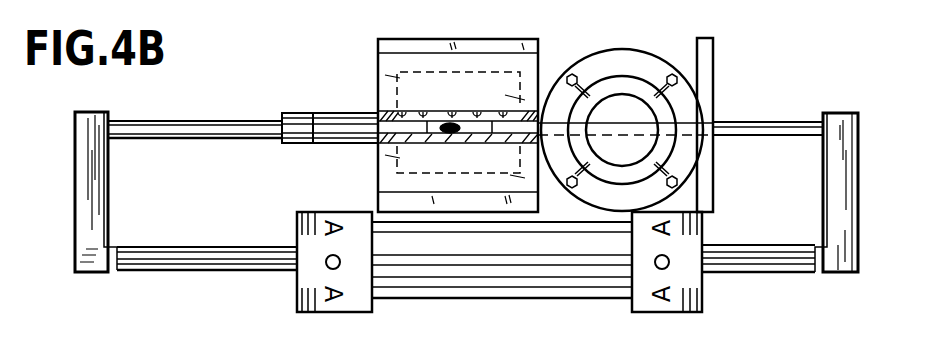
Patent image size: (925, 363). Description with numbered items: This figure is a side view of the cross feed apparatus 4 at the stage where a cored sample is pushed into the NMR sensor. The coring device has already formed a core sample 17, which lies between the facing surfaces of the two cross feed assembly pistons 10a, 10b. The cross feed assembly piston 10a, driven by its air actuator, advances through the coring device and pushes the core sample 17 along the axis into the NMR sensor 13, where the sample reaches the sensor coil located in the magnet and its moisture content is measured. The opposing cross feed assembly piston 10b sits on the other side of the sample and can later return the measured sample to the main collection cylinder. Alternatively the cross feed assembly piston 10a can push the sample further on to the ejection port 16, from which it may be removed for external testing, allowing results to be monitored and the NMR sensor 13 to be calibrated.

The cross feed apparatus 4 is at (823, 177).
The cross feed assembly piston 10a is at (743, 122).
The cross feed assembly piston 10b is at (178, 122).
The NMR sensor 13 is at (429, 39).
The ejection port 16 is at (357, 144).
The core sample 17 is at (443, 117).